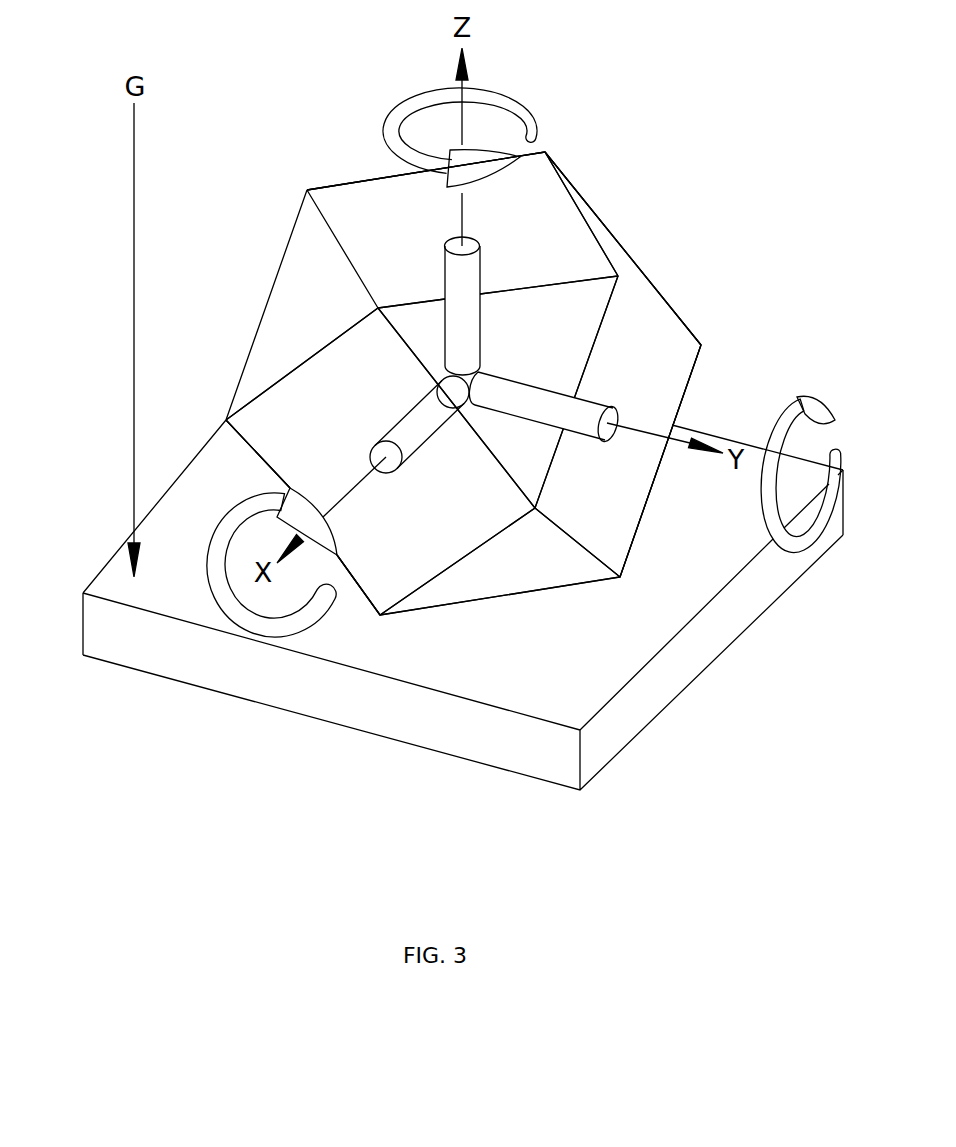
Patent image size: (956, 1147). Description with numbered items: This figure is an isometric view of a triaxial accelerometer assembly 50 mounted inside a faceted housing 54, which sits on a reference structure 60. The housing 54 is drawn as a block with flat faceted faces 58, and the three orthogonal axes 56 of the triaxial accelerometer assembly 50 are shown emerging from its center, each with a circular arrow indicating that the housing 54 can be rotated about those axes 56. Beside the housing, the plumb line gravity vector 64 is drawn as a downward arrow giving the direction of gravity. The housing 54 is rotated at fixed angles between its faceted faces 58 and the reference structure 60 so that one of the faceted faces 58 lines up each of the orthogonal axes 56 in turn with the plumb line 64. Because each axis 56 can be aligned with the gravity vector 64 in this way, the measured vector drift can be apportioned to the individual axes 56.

The triaxial accelerometer assembly 50 is at (440, 348).
The faceted housing 54 is at (307, 190).
The axes 56 is at (507, 103).
The faceted faces 58 is at (553, 230).
The reference structure 60 is at (533, 677).
The plumb line gravity vector 64 is at (133, 350).